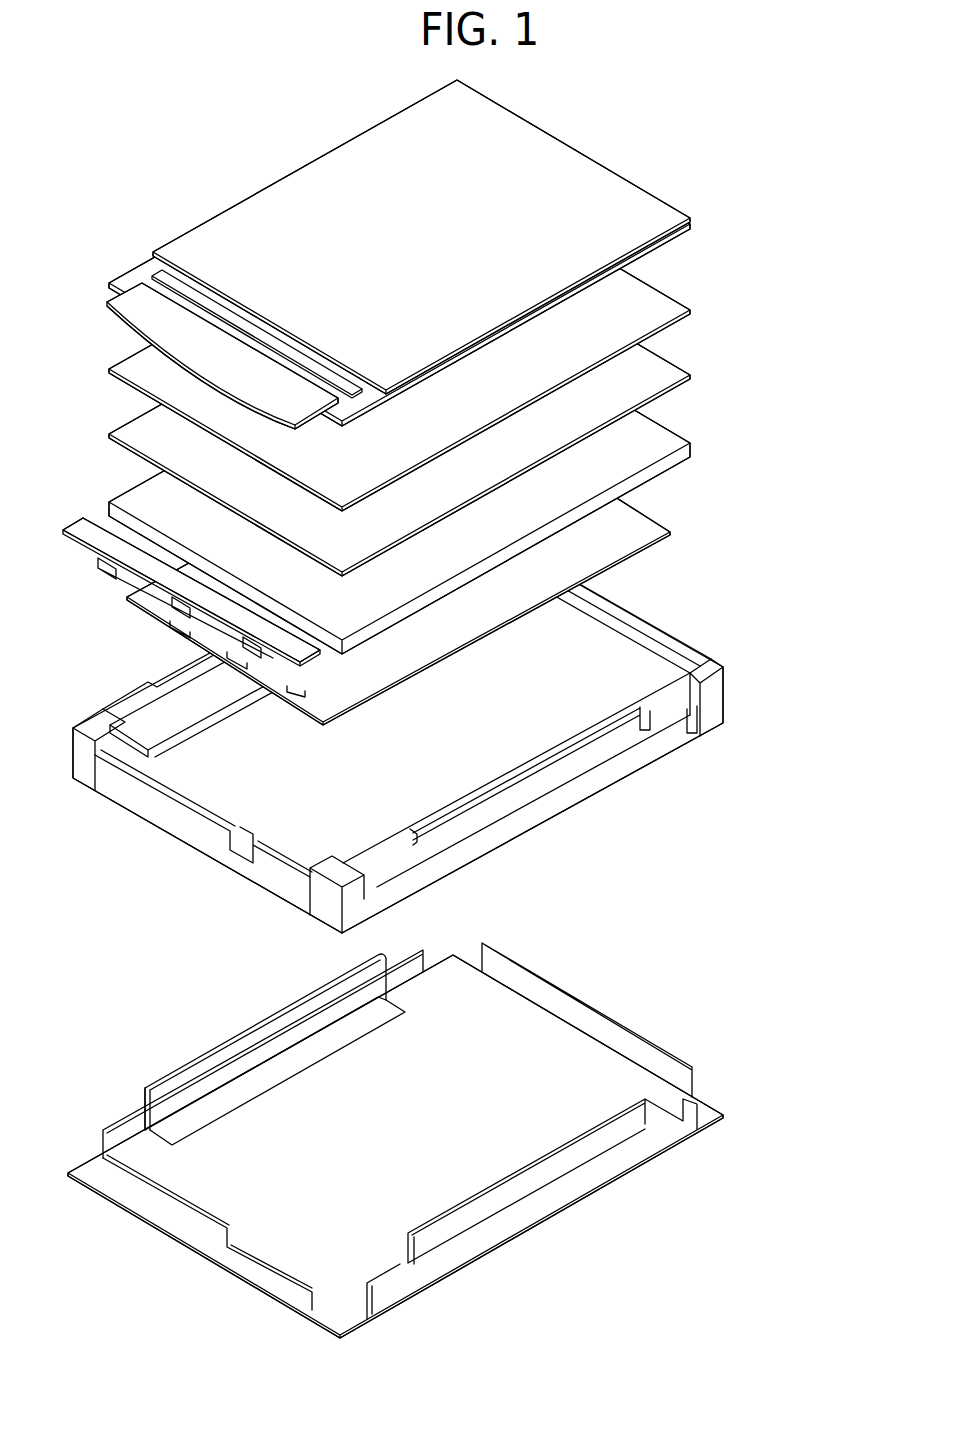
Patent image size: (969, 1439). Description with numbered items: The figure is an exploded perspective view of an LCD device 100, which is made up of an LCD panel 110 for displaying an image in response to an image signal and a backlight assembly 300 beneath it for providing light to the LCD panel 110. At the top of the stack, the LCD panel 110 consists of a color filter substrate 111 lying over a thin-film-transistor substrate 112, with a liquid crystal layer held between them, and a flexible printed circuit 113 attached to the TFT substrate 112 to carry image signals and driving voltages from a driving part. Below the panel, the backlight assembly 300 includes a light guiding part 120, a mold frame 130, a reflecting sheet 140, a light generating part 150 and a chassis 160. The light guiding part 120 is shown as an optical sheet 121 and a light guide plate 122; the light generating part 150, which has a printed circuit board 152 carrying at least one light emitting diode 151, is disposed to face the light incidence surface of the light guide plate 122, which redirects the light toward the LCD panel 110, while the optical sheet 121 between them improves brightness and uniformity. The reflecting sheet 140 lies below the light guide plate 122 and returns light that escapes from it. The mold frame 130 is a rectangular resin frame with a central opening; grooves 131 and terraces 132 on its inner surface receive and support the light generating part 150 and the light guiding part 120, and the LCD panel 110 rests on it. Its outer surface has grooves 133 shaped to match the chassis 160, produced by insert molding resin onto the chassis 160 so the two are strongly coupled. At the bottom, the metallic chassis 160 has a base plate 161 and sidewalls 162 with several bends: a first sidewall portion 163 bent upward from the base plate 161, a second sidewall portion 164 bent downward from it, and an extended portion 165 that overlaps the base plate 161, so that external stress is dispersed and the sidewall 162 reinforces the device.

The LCD device 100 is at (272, 144).
The LCD panel 110 is at (757, 183).
The color filter substrate 111 is at (690, 220).
The thin-film-transistor substrate 112 is at (690, 222).
The flexible printed circuit 113 is at (132, 309).
The light guiding part 120 is at (757, 357).
The optical sheet 121 is at (690, 315).
The light guide plate 122 is at (690, 449).
The mold frame 130 is at (670, 613).
The grooves 131 is at (268, 838).
The terraces 132 is at (185, 716).
The grooves 133 is at (562, 766).
The reflecting sheet 140 is at (670, 532).
The light generating part 150 is at (102, 648).
The light emitting diode 151 is at (174, 597).
The printed circuit board 152 is at (139, 560).
The chassis 160 is at (650, 977).
The base plate 161 is at (493, 1118).
The sidewall 162 is at (196, 1040).
The first sidewall portion 163 is at (145, 1092).
The second sidewall portion 164 is at (148, 1103).
The extended portion 165 is at (310, 1050).
The backlight assembly 300 is at (814, 287).